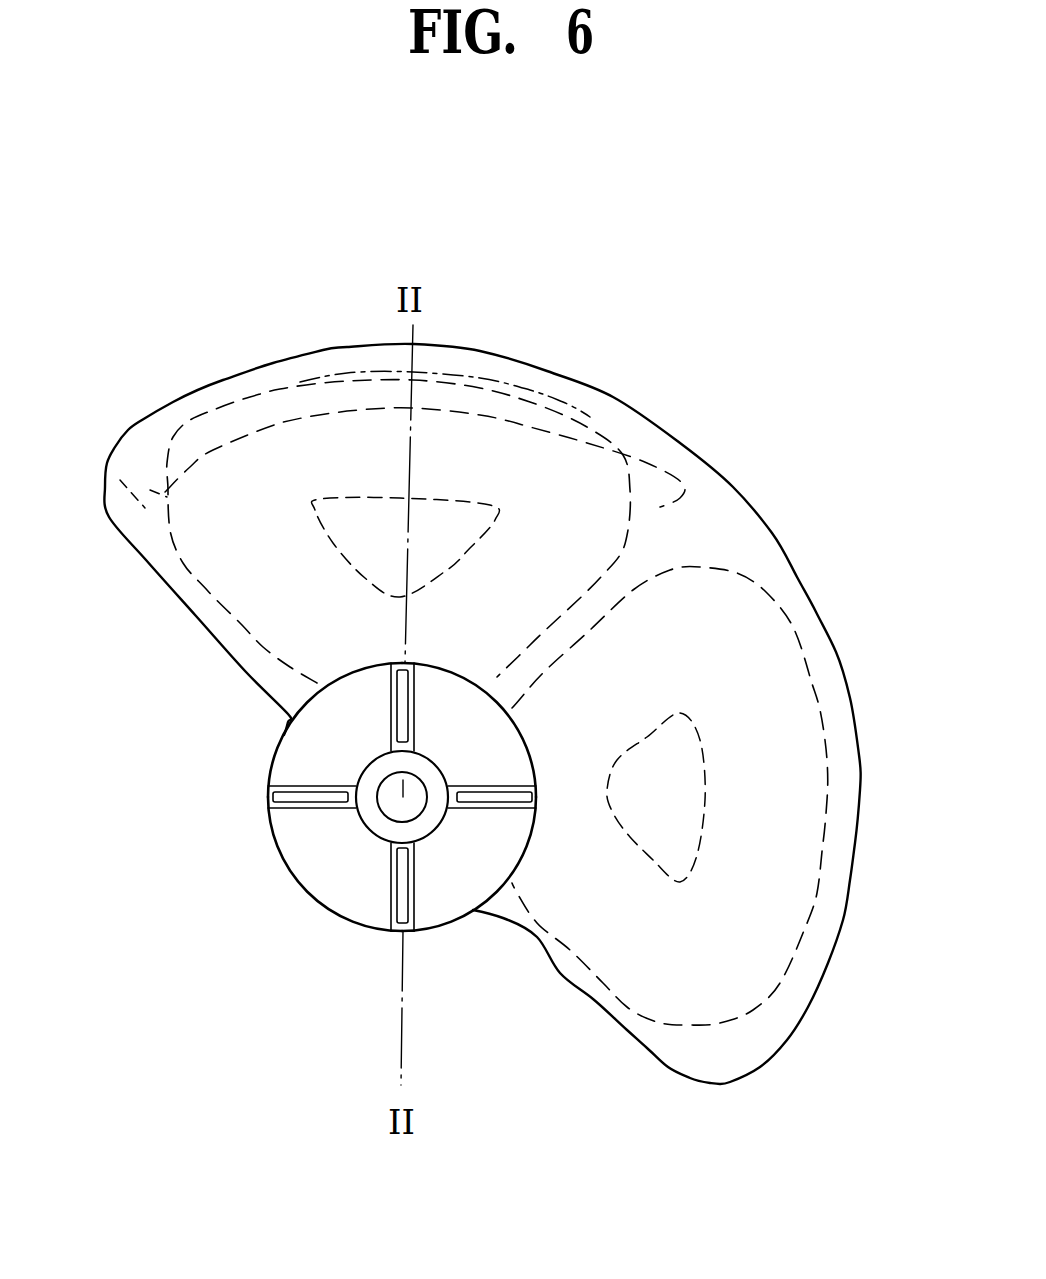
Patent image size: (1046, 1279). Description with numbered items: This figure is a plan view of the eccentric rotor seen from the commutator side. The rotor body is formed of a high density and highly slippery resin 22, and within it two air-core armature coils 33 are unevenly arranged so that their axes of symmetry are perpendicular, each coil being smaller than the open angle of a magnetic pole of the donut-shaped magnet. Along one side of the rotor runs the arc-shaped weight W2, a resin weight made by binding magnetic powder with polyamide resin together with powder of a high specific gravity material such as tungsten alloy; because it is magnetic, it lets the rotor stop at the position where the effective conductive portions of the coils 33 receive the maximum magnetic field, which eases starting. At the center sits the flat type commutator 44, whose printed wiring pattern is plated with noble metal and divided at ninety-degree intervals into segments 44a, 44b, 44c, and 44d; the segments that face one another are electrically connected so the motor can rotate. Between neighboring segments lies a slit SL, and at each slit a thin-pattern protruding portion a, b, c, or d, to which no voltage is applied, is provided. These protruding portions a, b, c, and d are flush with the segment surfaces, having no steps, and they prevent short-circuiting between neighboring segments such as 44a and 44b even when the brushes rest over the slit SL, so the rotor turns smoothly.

The high density and highly slippery resin 22 is at (720, 503).
The air-core armature coils 33 is at (497, 463).
The flat type commutator 44 is at (515, 760).
The segment 44a is at (490, 740).
The segment 44b is at (490, 853).
The segment 44c is at (313, 872).
The segment 44d is at (315, 738).
The protruding portion a is at (407, 663).
The protruding portion b is at (537, 794).
The protruding portion c is at (403, 937).
The protruding portion d is at (270, 794).
The arc-shaped weight W2 is at (147, 443).
The slit SL is at (413, 937).